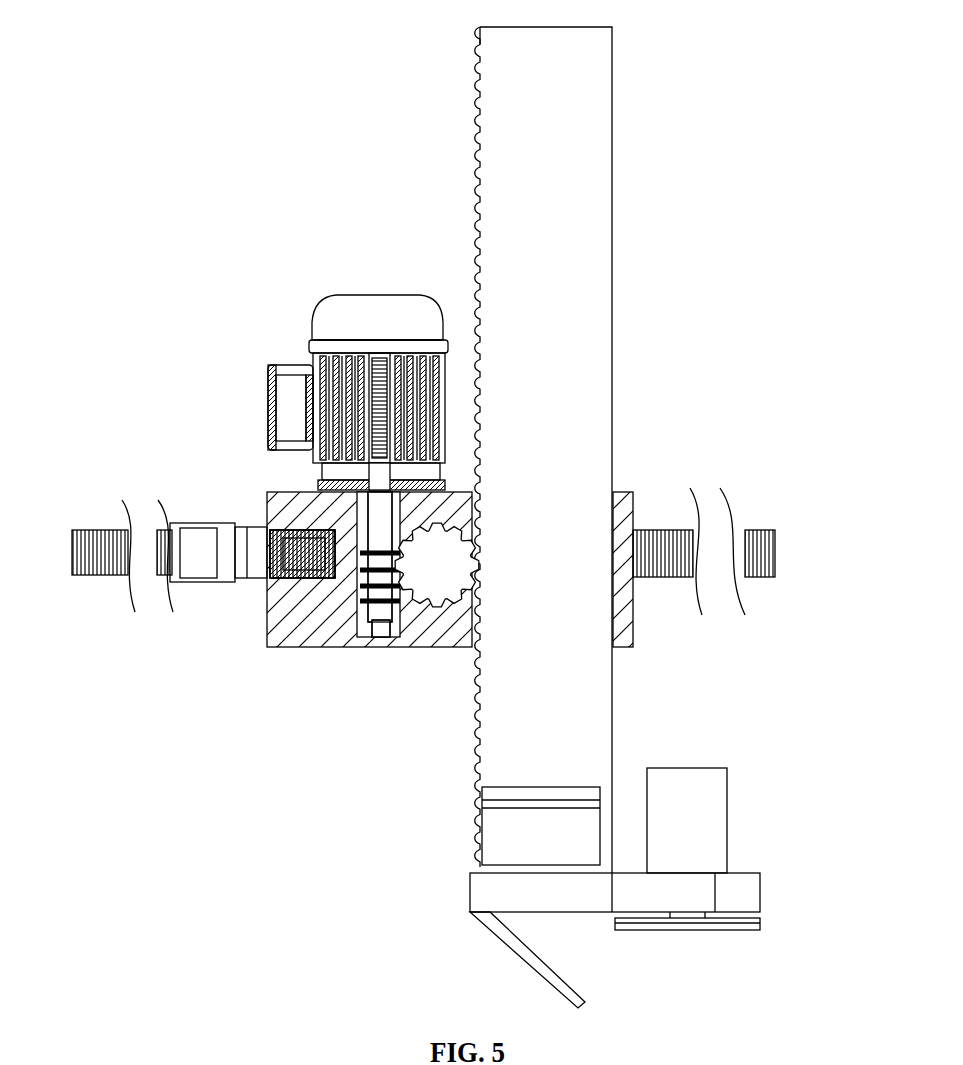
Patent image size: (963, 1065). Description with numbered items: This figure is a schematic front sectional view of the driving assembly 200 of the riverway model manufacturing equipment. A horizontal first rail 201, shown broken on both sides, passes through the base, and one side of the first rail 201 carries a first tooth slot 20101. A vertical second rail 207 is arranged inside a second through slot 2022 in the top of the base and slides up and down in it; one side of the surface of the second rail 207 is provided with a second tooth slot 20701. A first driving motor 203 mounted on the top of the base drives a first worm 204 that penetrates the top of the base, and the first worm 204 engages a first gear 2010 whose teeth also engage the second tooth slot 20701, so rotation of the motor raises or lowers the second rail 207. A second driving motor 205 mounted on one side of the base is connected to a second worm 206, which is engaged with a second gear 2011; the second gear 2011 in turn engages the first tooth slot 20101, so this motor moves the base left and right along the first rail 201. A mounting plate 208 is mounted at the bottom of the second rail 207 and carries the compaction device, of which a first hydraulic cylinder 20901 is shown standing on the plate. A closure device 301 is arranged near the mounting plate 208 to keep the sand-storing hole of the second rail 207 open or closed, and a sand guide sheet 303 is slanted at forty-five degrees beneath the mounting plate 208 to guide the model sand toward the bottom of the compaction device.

The driving assembly 200 is at (657, 252).
The first rail 201 is at (133, 535).
The first driving motor 203 is at (368, 320).
The first worm 204 is at (380, 548).
The second driving motor 205 is at (220, 570).
The second worm 206 is at (290, 575).
The second rail 207 is at (584, 120).
The mounting plate 208 is at (512, 887).
The first gear 2010 is at (437, 548).
The second gear 2011 is at (322, 578).
The second through slot 2022 is at (620, 498).
The first tooth slot 20101 is at (750, 541).
The second tooth slot 20701 is at (477, 213).
The first hydraulic cylinder 20901 is at (680, 827).
The closure device 301 is at (555, 797).
The sand guide sheet 303 is at (520, 947).